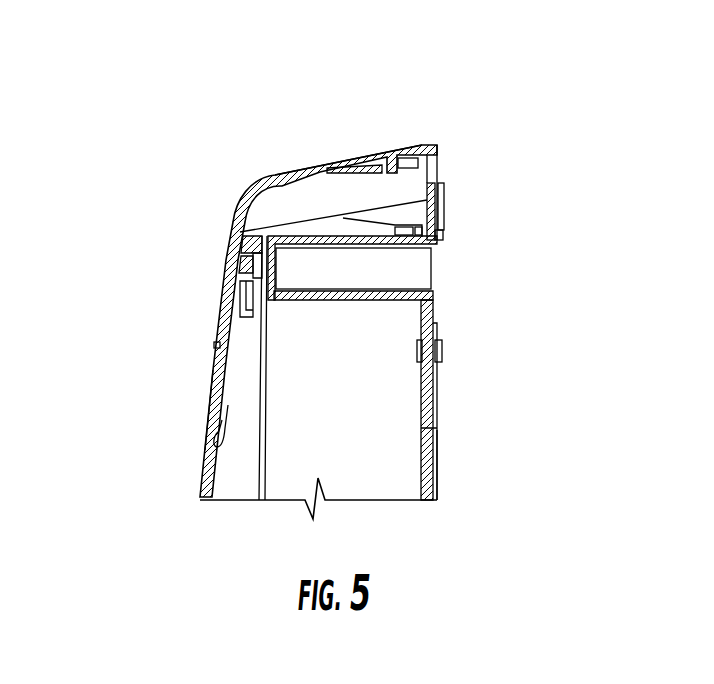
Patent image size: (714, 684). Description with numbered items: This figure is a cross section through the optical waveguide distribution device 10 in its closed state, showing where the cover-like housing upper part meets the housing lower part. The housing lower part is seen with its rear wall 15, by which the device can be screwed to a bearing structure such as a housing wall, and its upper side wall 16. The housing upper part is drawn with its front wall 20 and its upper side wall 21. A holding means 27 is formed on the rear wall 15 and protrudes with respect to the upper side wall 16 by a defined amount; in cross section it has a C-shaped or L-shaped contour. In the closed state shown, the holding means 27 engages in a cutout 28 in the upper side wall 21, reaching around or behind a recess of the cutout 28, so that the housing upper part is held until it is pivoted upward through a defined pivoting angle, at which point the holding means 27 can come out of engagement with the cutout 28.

The optical waveguide distribution device 10 is at (506, 115).
The rear wall 15 is at (434, 428).
The upper side wall 16 is at (355, 243).
The front wall 20 is at (213, 344).
The upper side wall 21 is at (325, 166).
The holding means 27 is at (441, 127).
The cutout 28 is at (375, 150).